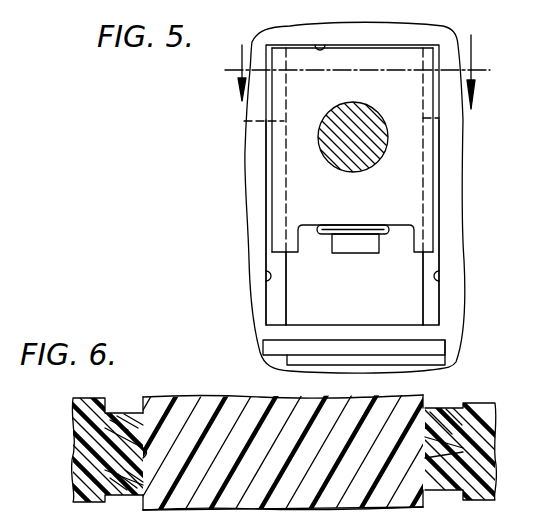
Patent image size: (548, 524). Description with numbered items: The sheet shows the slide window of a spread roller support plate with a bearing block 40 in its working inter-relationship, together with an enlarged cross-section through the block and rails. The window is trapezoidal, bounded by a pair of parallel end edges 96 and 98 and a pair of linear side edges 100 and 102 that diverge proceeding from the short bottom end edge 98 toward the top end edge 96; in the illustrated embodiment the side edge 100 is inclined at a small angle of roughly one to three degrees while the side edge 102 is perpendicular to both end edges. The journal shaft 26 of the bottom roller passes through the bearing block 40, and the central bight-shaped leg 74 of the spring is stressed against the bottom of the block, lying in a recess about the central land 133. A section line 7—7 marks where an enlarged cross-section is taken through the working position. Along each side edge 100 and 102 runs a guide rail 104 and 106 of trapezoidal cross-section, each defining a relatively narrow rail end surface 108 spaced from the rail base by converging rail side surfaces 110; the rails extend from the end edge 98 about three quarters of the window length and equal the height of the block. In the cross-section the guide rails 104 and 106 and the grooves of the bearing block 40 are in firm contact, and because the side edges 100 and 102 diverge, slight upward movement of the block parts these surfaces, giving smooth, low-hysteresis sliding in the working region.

In FIG. 5, the section line 7- 7 is at (355, 72).
In FIG. 5, the journal shaft 26 is at (342, 123).
In FIG. 6, the bearing block 40 is at (281, 493).
In FIG. 5, the central bight-shaped leg 74 is at (352, 227).
In FIG. 5, the end edge 96 is at (327, 50).
In FIG. 5, the end edge 98 is at (296, 320).
In FIG. 5, the side edge 100 is at (268, 283).
In FIG. 6, the side edge 100 is at (92, 497).
In FIG. 5, the side edge 102 is at (438, 279).
In FIG. 6, the side edge 102 is at (462, 497).
In FIG. 5, the guide rail 104 is at (280, 301).
In FIG. 6, the guide rail 104 is at (172, 405).
In FIG. 5, the guide rail 106 is at (428, 295).
In FIG. 6, the guide rail 106 is at (445, 440).
In FIG. 6, the rail end surface 108 is at (143, 443).
In FIG. 6, the rail side surfaces 110 is at (121, 430).
In FIG. 5, the central land 133 is at (373, 249).